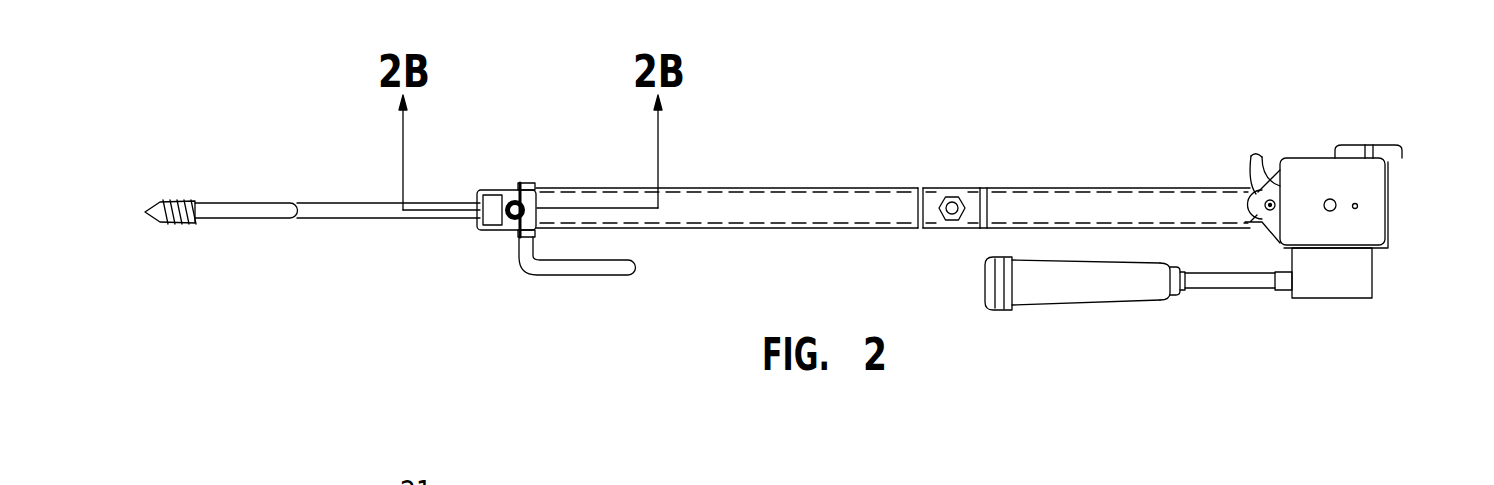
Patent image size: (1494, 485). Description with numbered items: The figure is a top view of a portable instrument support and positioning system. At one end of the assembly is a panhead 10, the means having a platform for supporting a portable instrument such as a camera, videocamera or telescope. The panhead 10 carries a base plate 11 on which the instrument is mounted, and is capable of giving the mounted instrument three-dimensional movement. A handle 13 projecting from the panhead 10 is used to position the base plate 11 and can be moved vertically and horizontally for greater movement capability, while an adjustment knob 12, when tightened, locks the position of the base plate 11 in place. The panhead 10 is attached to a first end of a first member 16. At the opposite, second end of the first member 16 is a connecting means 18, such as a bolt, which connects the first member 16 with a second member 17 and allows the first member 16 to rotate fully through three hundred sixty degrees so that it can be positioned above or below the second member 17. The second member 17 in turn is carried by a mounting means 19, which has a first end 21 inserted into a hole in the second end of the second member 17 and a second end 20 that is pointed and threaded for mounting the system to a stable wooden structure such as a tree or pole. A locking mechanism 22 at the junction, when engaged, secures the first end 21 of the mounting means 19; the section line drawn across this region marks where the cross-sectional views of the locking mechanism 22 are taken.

The panhead 10 is at (1294, 110).
The base plate 11 is at (1368, 183).
The adjustment knob 12 is at (1252, 158).
The handle 13 is at (1073, 288).
The first member 16 is at (1113, 186).
The second member 17 is at (765, 187).
The connecting means 18 is at (953, 197).
The mounting means 19 is at (252, 185).
The second end 20 is at (163, 207).
The first end 21 is at (512, 220).
The locking mechanism 22 is at (571, 276).